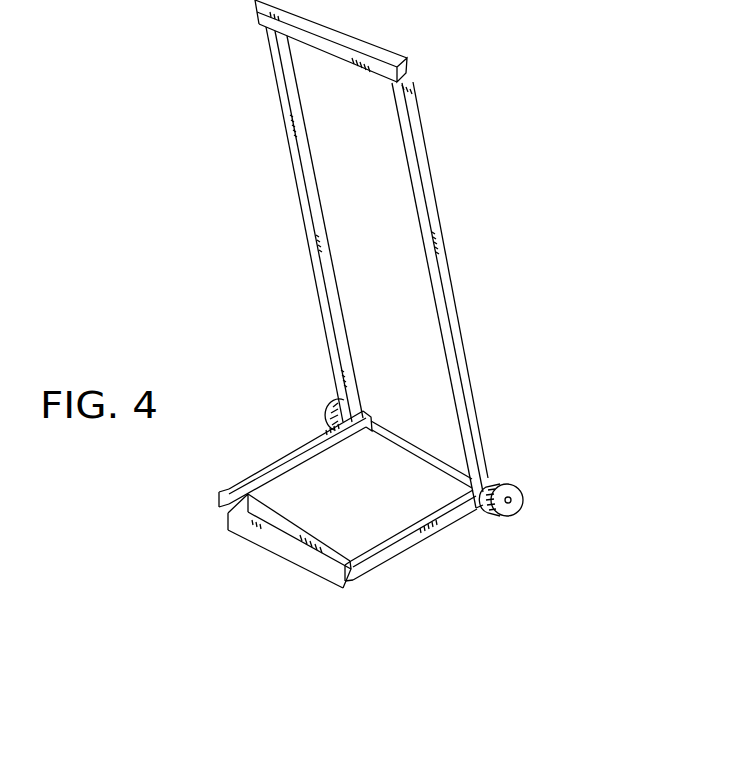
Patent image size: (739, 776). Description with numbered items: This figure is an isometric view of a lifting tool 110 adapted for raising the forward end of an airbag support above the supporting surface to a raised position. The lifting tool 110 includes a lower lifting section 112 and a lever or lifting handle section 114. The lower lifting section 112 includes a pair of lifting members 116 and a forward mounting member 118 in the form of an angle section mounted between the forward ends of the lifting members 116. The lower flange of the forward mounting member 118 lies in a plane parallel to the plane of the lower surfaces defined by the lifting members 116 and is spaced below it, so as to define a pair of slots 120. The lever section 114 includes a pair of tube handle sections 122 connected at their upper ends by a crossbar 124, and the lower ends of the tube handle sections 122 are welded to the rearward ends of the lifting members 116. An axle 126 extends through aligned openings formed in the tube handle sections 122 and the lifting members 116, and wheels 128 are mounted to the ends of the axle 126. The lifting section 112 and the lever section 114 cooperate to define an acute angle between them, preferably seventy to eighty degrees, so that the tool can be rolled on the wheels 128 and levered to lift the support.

The lifting tool 110 is at (258, 212).
The lower lifting section 112 is at (288, 422).
The lever or lifting handle section 114 is at (466, 232).
The lifting members 116 is at (314, 466).
The forward mounting member 118 is at (262, 556).
The slots 120 is at (230, 514).
The tube handle sections 122 is at (415, 200).
The crossbar 124 is at (348, 36).
The axle 126 is at (398, 440).
The wheels 128 is at (340, 401).